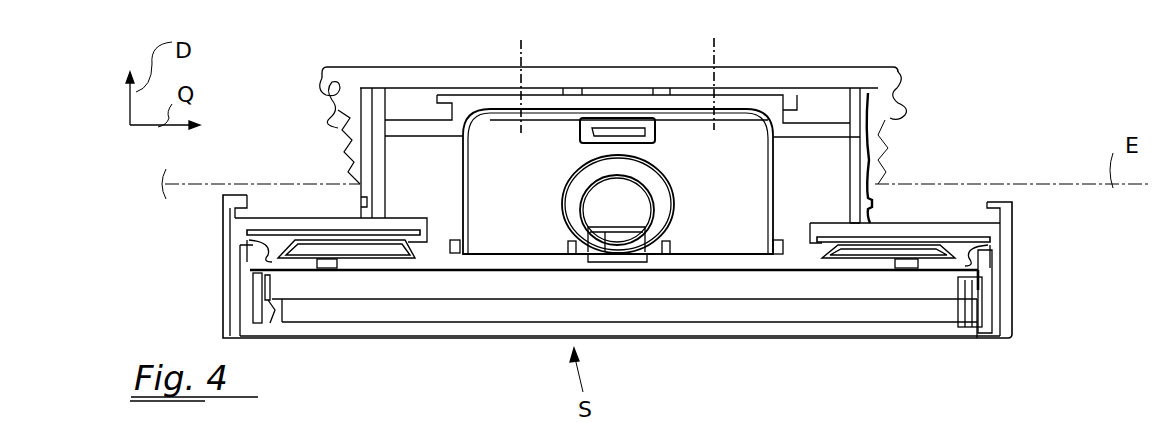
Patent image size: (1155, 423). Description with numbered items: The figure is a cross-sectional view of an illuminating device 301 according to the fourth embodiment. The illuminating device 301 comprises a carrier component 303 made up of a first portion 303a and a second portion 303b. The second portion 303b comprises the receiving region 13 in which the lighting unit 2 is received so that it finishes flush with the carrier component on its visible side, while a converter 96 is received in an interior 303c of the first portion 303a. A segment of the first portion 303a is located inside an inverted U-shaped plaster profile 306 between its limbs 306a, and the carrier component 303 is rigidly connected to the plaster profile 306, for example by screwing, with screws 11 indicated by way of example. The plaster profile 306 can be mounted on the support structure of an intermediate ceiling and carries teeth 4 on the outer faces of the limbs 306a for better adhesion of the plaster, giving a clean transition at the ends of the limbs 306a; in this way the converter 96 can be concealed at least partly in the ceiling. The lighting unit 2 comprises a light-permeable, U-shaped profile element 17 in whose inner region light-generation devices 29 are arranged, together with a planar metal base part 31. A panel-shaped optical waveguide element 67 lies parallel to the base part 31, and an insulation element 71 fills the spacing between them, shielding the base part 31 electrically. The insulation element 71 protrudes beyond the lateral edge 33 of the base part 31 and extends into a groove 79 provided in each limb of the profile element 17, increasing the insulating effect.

The lighting unit 2 is at (655, 349).
The teeth 4 is at (350, 155).
The screws 11 is at (519, 52).
The receiving region 13 is at (990, 292).
The profile element 17 is at (497, 338).
The light-generation devices 29 is at (278, 283).
The planar base part 31 is at (423, 276).
The lateral edge 33 is at (262, 257).
The optical waveguide element 67 is at (735, 292).
The insulation element 71 is at (788, 276).
The groove 79 is at (252, 270).
The converter 96 is at (528, 150).
The illuminating device 301 is at (1010, 112).
The carrier component 303 is at (895, 230).
The first portion 303a is at (883, 147).
The second portion 303b is at (1026, 202).
The interior 303c is at (840, 187).
The plaster profile 306 is at (814, 78).
The limbs 306a is at (340, 127).